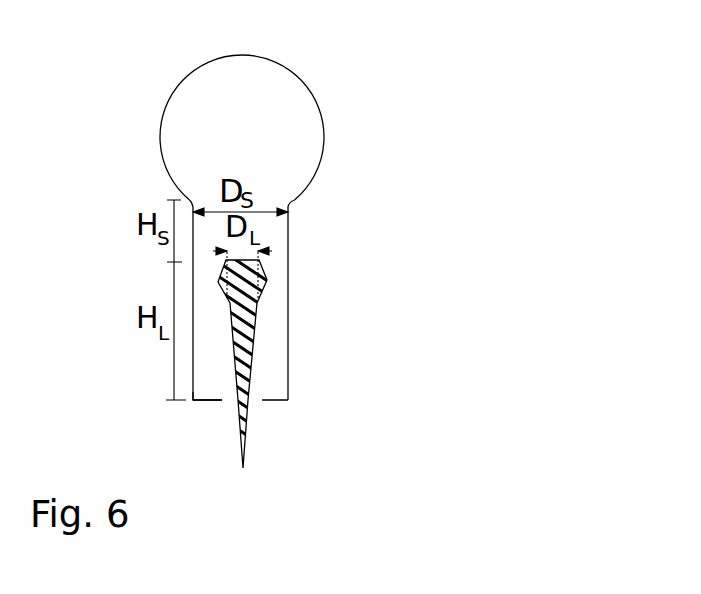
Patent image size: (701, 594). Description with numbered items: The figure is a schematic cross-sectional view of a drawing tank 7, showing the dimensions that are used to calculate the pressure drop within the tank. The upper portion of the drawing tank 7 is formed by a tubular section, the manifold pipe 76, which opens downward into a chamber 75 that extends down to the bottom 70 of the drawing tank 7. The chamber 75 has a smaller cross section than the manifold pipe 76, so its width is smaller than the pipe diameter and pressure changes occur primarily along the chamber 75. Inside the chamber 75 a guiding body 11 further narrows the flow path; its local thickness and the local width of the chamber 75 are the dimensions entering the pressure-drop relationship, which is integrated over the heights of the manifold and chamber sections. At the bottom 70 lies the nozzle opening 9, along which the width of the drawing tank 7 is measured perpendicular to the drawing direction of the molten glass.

The drawing tank 7 is at (348, 262).
The manifold pipe 76 is at (317, 107).
The chamber 75 is at (289, 328).
The bottom 70 is at (262, 400).
The nozzle opening 9 is at (222, 400).
The guiding body 11 is at (248, 442).